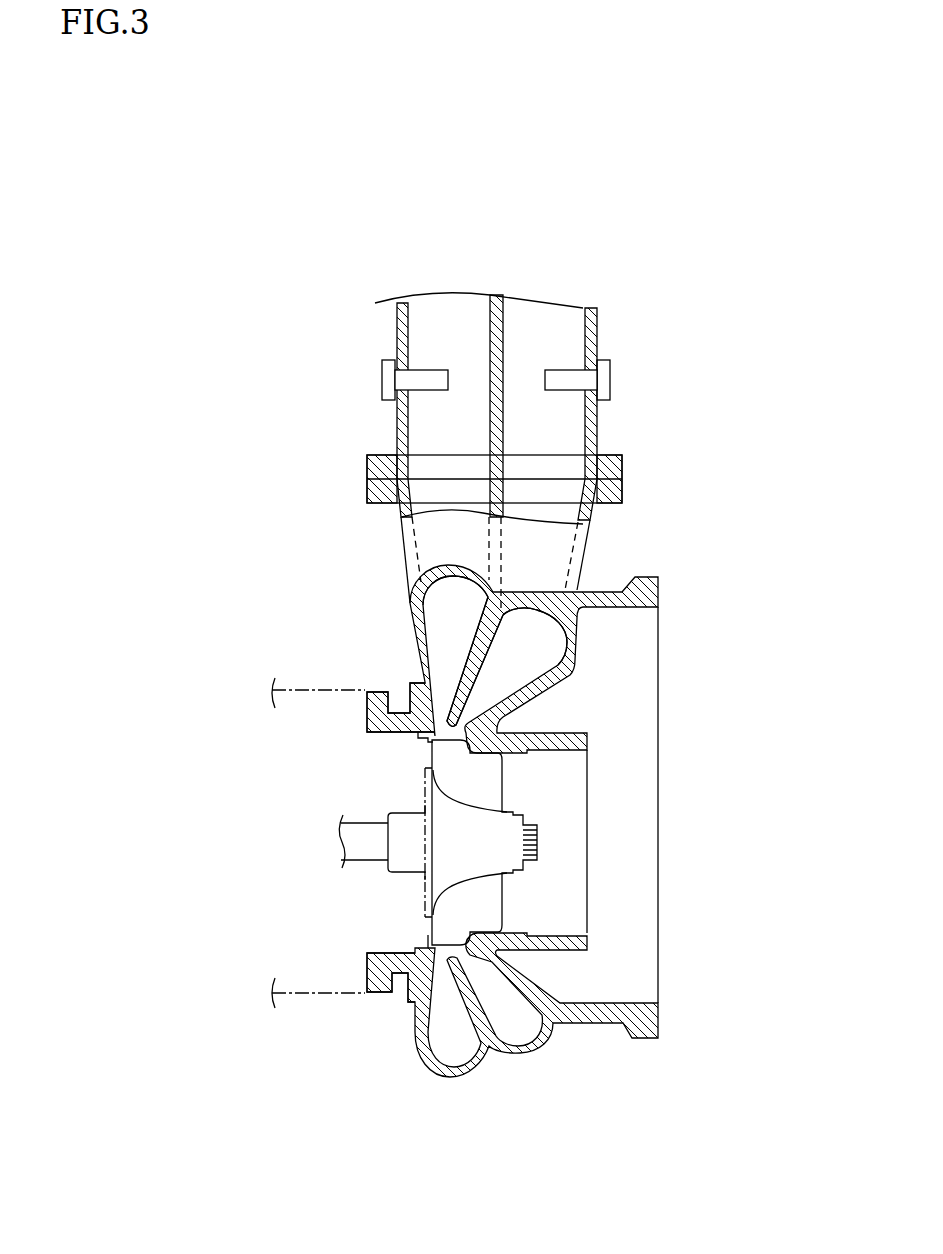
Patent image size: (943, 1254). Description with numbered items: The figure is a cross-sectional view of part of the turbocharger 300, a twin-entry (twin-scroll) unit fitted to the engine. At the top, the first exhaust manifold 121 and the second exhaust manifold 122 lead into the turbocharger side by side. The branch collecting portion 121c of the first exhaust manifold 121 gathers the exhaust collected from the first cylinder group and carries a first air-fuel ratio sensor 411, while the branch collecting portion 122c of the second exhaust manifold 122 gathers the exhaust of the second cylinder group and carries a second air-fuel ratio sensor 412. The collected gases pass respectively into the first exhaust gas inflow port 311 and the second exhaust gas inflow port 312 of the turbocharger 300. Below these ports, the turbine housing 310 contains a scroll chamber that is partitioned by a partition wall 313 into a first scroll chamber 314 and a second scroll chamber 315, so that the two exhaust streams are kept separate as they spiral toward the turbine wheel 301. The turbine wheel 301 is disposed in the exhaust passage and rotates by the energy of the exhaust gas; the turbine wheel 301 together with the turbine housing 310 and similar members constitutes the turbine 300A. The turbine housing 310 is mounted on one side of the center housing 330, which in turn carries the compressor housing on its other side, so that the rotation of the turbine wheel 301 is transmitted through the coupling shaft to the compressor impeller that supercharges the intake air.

The first exhaust manifold 121 is at (378, 320).
The second exhaust manifold 122 is at (608, 320).
The branch collecting portion 121c is at (427, 427).
The branch collecting portion 122c is at (558, 430).
The first air-fuel ratio sensor 411 is at (432, 375).
The second air-fuel ratio sensor 412 is at (562, 377).
The turbocharger 300 is at (677, 487).
The turbine 300A is at (513, 1063).
The turbine wheel 301 is at (478, 893).
The turbine housing 310 is at (407, 612).
The first exhaust gas inflow port 311 is at (432, 493).
The second exhaust gas inflow port 312 is at (545, 492).
The partition wall 313 is at (468, 678).
The first scroll chamber 314 is at (458, 590).
The second scroll chamber 315 is at (547, 645).
The center housing 330 is at (300, 688).